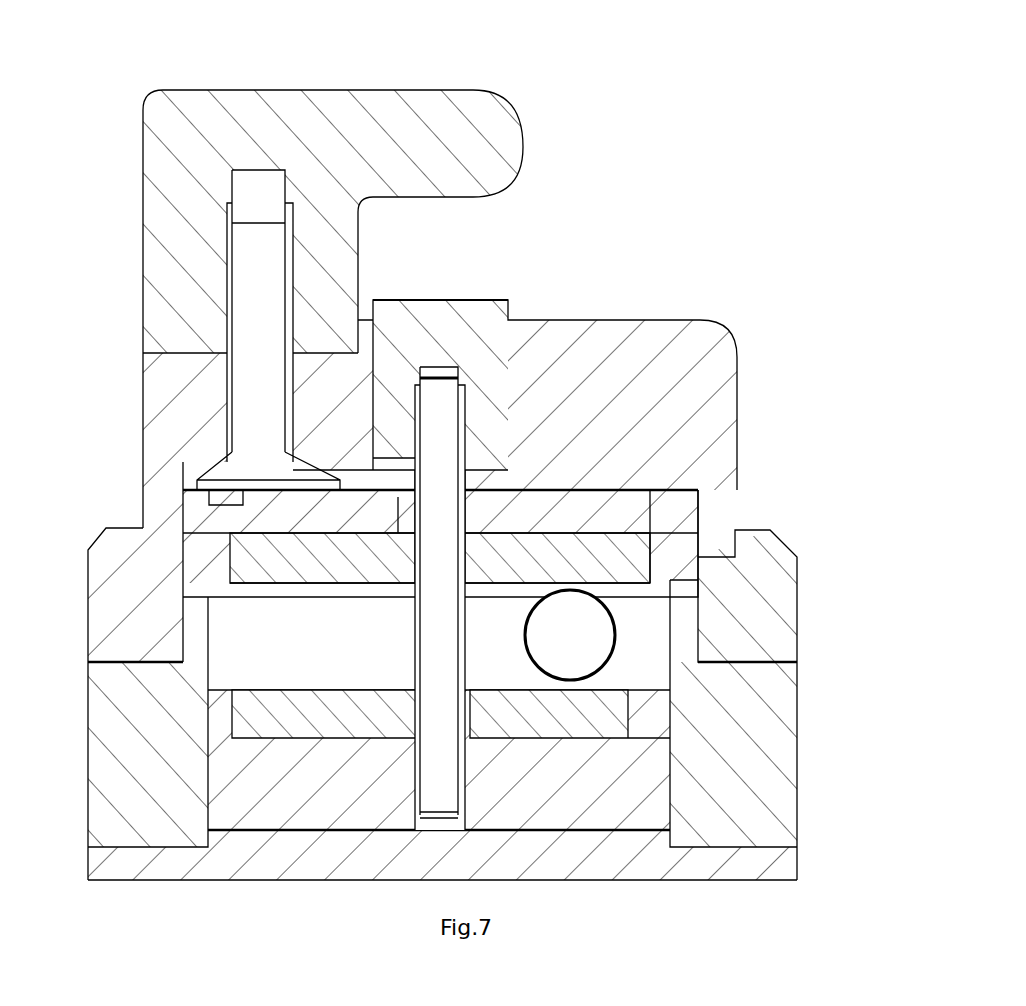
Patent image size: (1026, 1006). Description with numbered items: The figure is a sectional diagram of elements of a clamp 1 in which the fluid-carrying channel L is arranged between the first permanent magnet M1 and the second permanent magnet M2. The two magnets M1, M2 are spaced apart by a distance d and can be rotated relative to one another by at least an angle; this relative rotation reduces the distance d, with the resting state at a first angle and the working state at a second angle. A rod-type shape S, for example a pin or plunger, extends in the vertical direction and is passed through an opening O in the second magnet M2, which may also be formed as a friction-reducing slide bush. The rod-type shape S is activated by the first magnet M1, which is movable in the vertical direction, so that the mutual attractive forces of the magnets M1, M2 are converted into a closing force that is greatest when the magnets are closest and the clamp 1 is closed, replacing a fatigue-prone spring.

The clamp 1 is at (95, 80).
The rod-type shape S is at (440, 457).
The opening O is at (445, 573).
The second permanent magnet M2 is at (596, 556).
The first permanent magnet M1 is at (595, 718).
The fluid-carrying channel L is at (617, 632).
The distance d is at (325, 583).